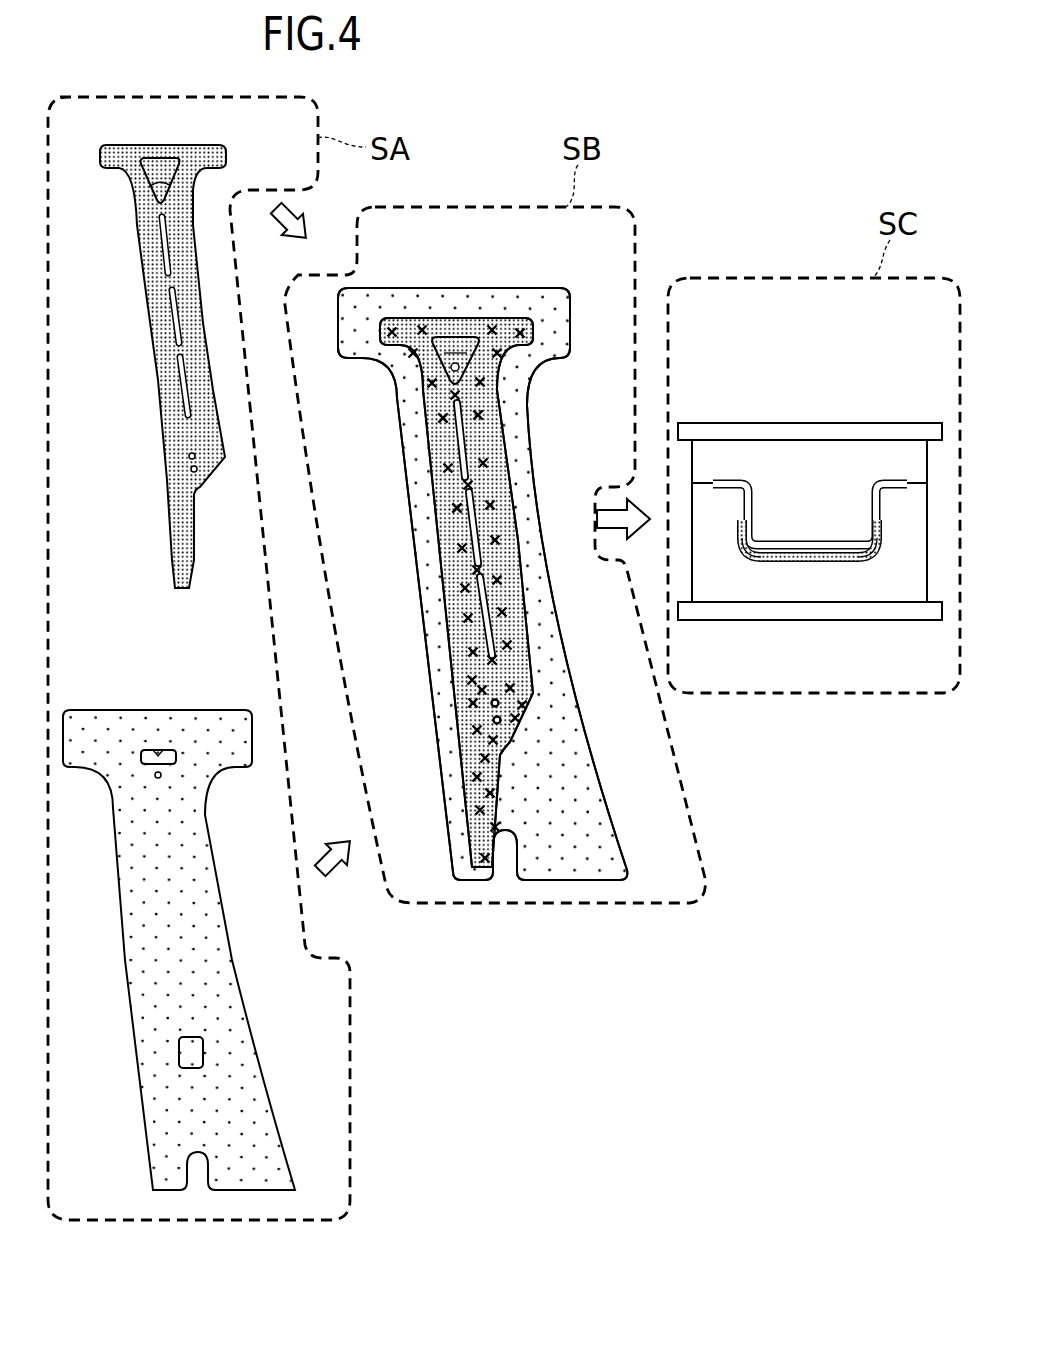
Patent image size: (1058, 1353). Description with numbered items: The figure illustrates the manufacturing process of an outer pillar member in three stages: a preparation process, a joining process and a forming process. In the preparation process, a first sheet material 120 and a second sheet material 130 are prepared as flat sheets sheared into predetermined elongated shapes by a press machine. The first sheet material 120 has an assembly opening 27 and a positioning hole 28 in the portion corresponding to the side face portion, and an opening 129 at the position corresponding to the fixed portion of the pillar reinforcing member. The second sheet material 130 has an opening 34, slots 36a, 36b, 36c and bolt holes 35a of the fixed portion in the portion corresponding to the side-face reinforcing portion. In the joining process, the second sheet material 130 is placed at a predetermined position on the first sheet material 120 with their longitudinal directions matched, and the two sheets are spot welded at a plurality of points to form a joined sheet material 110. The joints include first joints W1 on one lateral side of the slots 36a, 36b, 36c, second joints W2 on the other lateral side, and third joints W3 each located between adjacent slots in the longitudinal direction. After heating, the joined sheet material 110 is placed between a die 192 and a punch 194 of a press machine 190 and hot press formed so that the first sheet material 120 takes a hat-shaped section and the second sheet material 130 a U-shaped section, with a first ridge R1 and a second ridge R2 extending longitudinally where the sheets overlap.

The joined sheet material 110 is at (542, 286).
The first sheet material 120 is at (232, 962).
The second sheet material 130 is at (228, 152).
The assembly opening 27 is at (155, 748).
The positioning hole 28 is at (155, 776).
The opening 34 is at (152, 186).
The bolt holes 35a is at (191, 470).
The slot 36a is at (162, 240).
The slot 36b is at (167, 312).
The slot 36c is at (178, 382).
The opening 129 is at (179, 1054).
The press machine 190 is at (901, 353).
The die 192 is at (843, 585).
The punch 194 is at (845, 458).
The first ridge R1 is at (878, 552).
The second ridge R2 is at (742, 550).
The first joints W1 is at (480, 415).
The second joints W2 is at (443, 418).
The third joints W3 is at (456, 508).